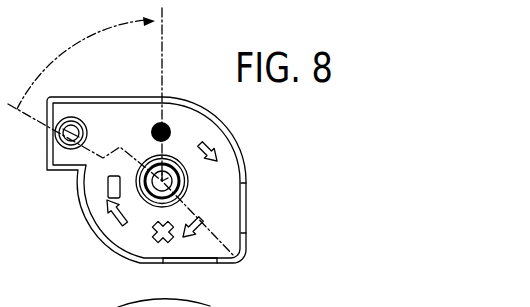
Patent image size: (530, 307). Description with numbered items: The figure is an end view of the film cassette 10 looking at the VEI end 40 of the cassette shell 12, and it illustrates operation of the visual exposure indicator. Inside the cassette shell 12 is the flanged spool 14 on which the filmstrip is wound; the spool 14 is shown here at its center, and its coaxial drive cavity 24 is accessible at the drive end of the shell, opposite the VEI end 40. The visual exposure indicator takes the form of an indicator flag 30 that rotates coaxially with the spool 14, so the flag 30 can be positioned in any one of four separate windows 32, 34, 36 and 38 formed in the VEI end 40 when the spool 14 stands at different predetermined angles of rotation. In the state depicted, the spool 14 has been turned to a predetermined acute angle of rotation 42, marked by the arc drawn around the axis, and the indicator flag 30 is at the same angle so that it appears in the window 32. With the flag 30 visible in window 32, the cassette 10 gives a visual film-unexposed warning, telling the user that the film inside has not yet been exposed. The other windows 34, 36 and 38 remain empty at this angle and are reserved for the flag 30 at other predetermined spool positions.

The film cassette 10 is at (252, 253).
The cassette shell 12 is at (217, 250).
The flanged spool 14 is at (187, 178).
The drive cavity 24 is at (186, 163).
The indicator flag 30 is at (158, 123).
The window 32 is at (179, 108).
The window 34 is at (208, 198).
The window 36 is at (152, 243).
The window 38 is at (108, 196).
The VEI end 40 is at (233, 229).
The predetermined acute angle of rotation 42 is at (150, 21).